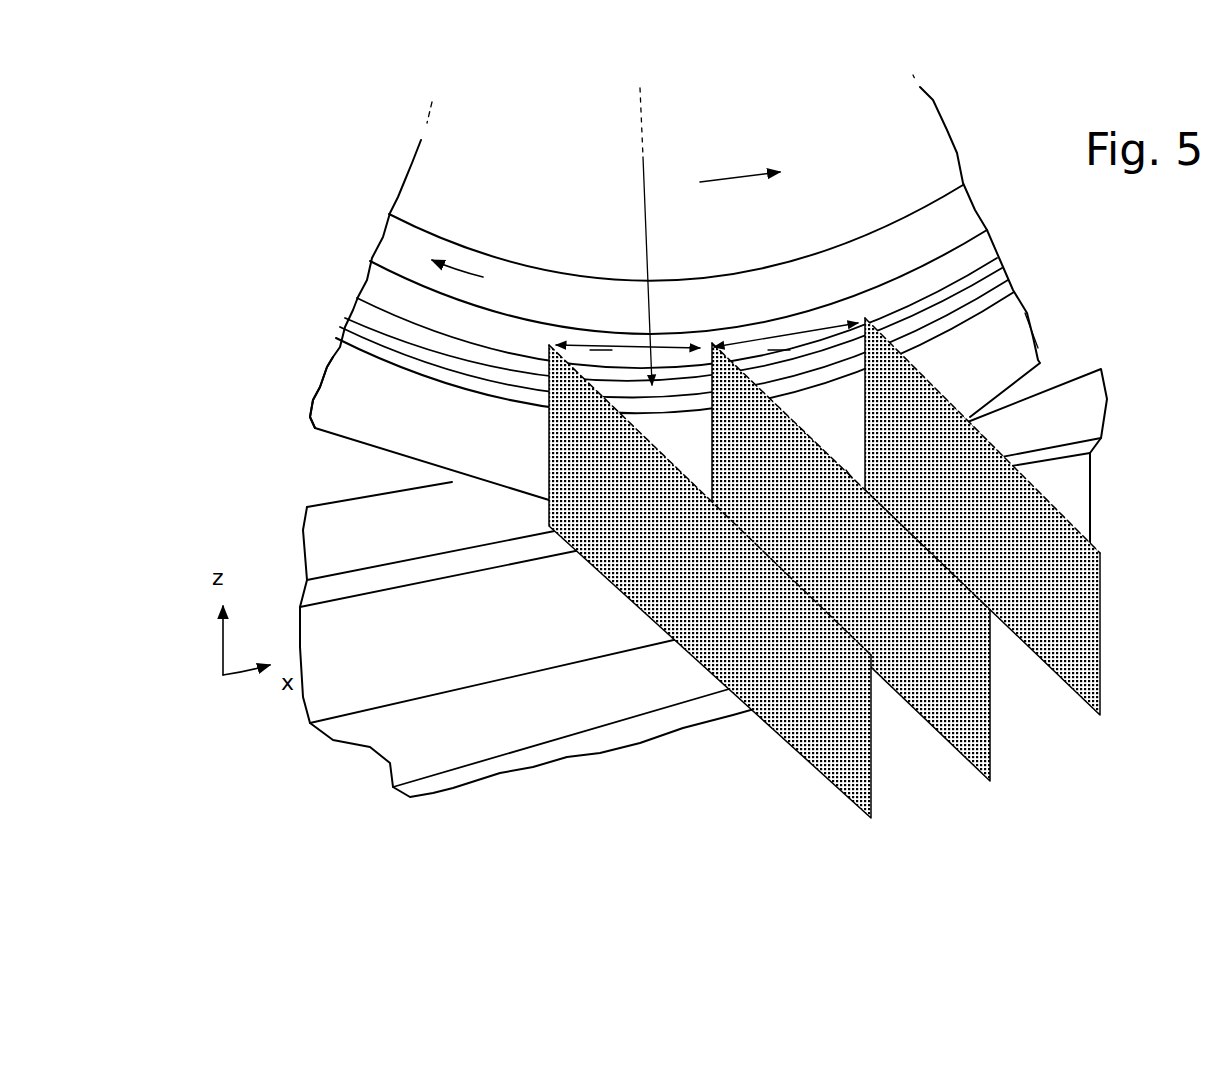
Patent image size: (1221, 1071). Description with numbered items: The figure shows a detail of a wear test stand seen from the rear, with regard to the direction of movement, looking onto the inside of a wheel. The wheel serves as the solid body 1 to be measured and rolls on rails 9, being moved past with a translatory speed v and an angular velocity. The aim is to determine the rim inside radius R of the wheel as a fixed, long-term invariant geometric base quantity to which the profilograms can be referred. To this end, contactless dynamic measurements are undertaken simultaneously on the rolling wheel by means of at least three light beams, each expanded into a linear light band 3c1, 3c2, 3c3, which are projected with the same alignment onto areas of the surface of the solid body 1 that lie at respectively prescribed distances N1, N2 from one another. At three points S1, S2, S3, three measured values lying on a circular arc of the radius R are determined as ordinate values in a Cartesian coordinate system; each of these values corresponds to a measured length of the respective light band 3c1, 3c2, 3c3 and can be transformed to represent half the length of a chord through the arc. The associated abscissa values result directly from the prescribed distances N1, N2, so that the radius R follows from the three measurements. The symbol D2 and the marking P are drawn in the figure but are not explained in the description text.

The solid body 1 is at (872, 262).
The linear light band 3c1 is at (858, 765).
The linear light band 3c2 is at (978, 688).
The linear light band 3c3 is at (1087, 598).
The rails 9 is at (322, 545).
The roller diameter D2 is at (350, 400).
The prescribed distance N1 is at (601, 348).
The prescribed distance N2 is at (778, 347).
The rim inside radius R is at (641, 206).
The contact point P is at (1010, 343).
The translatory speed v is at (737, 172).
The measuring point S1 is at (550, 386).
The measuring point S2 is at (700, 393).
The measuring point S3 is at (857, 363).